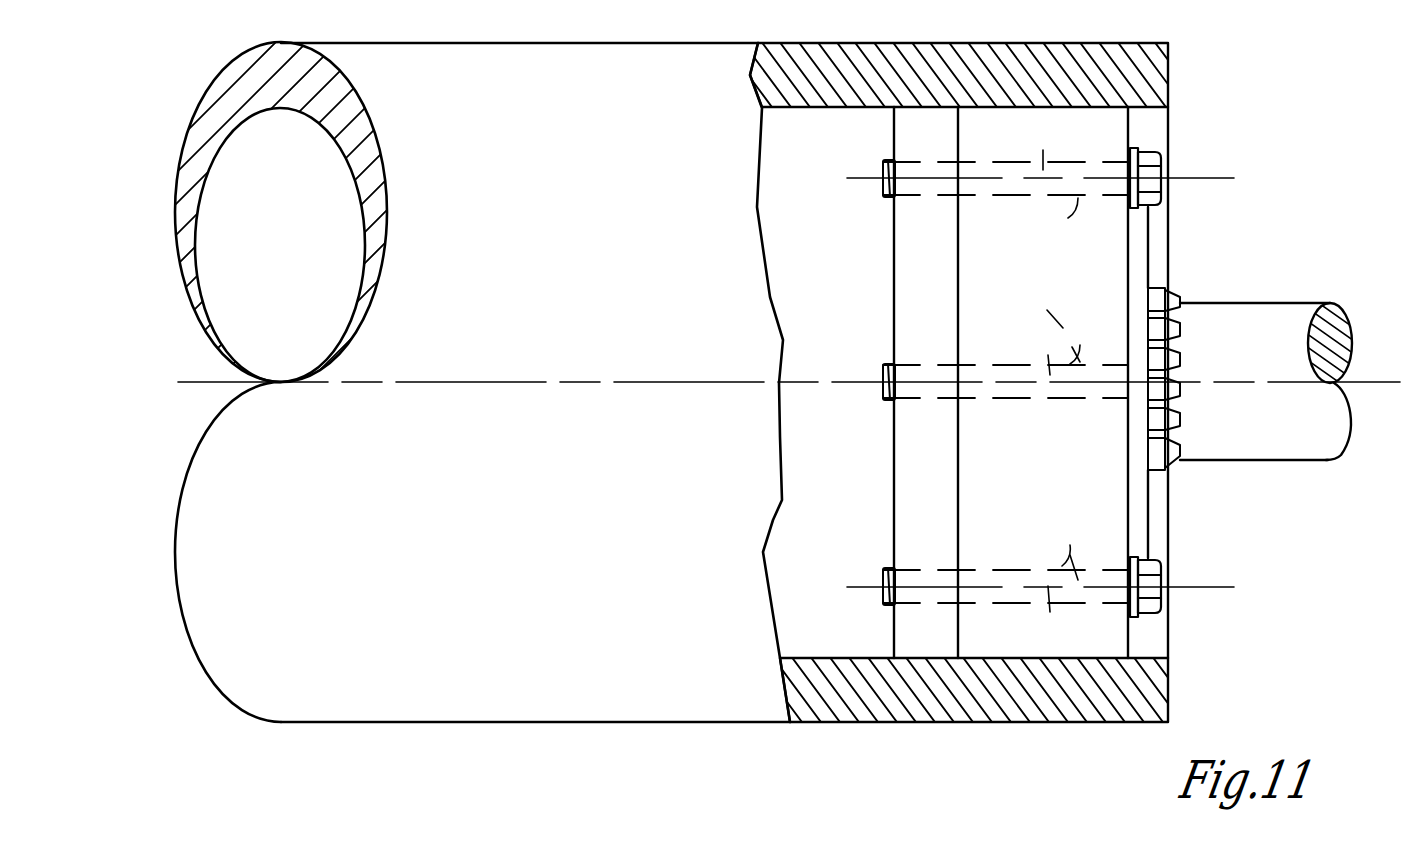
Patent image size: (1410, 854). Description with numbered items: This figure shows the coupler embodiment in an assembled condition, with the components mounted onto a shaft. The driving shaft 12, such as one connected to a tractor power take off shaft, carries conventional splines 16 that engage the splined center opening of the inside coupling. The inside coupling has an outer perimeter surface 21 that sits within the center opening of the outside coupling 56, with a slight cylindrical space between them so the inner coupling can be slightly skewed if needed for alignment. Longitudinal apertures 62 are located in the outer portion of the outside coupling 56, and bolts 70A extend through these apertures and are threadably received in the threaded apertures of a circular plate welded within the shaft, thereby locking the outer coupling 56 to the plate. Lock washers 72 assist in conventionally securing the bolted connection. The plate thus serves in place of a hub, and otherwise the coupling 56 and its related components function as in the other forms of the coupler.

The driving shaft 12 is at (1297, 305).
The splines 16 is at (1182, 322).
The outer perimeter surface 21 is at (1142, 260).
The outside coupling 56 is at (1070, 112).
The longitudinal apertures 62 is at (1042, 228).
The bolts 70A is at (1037, 133).
The lock washers 72 is at (1131, 148).